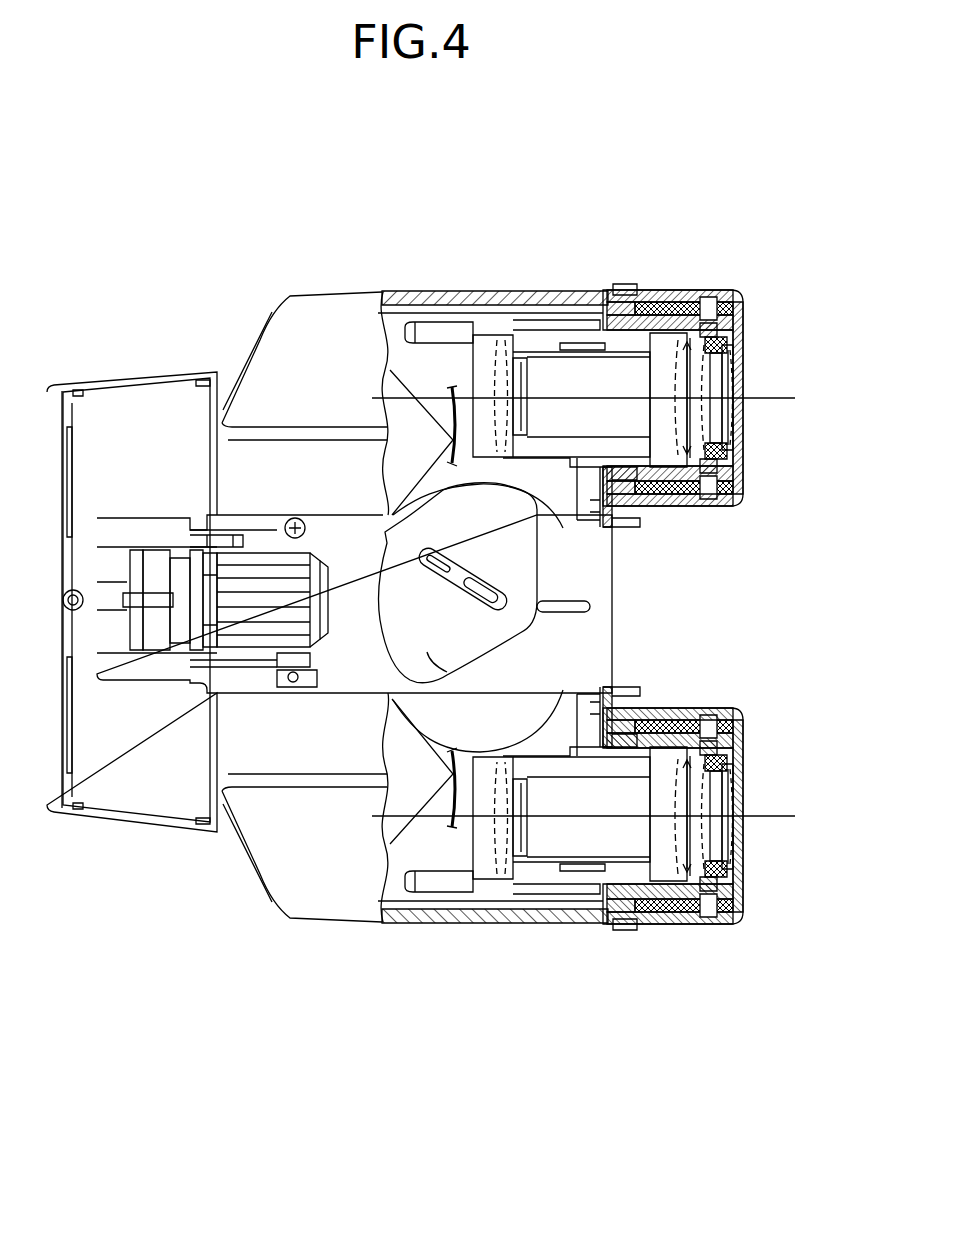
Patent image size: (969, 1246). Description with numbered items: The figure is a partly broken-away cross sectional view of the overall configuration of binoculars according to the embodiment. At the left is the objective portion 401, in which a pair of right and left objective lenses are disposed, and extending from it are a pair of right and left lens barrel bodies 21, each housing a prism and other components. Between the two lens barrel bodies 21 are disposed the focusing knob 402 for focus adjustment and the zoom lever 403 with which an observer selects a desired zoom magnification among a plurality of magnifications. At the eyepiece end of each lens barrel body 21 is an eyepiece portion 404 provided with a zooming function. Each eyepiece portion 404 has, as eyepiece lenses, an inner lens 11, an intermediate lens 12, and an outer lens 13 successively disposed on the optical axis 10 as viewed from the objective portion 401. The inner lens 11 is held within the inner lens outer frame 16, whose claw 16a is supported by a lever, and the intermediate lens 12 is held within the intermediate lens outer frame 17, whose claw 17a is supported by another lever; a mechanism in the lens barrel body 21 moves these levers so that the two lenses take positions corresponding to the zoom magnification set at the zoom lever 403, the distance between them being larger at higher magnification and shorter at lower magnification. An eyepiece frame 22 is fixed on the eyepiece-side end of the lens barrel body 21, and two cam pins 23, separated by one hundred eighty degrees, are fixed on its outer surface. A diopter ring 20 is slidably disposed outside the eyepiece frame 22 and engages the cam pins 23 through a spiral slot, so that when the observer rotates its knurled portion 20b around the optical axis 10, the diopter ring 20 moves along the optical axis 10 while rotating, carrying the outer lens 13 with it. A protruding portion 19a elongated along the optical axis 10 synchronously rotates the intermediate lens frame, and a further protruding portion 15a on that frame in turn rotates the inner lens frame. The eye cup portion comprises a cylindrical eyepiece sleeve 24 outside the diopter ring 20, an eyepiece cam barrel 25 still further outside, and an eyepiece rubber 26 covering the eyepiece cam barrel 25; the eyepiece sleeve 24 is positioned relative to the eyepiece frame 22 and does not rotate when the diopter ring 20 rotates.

The optical axis 10 is at (750, 817).
The inner lens 11 is at (508, 340).
The intermediate lens 12 is at (707, 377).
The outer lens 13 is at (730, 415).
The protruding portion 15a is at (540, 457).
The inner lens outer frame 16 is at (483, 338).
The claw 16a is at (563, 528).
The intermediate lens outer frame 17 is at (677, 506).
The claw 17a is at (617, 513).
The protruding portion 19a is at (540, 927).
The diopter ring 20 is at (640, 290).
The knurled portion 20b is at (623, 285).
The lens barrel body 21 is at (440, 293).
The eyepiece frame 22 is at (603, 320).
The cam pin 23 is at (708, 297).
The eyepiece sleeve 24 is at (670, 305).
The eyepiece cam barrel 25 is at (730, 293).
The eyepiece rubber 26 is at (687, 293).
The objective portion 401 is at (135, 782).
The focusing knob 402 is at (263, 623).
The zoom lever 403 is at (427, 652).
The eyepiece portion 404 is at (440, 180).